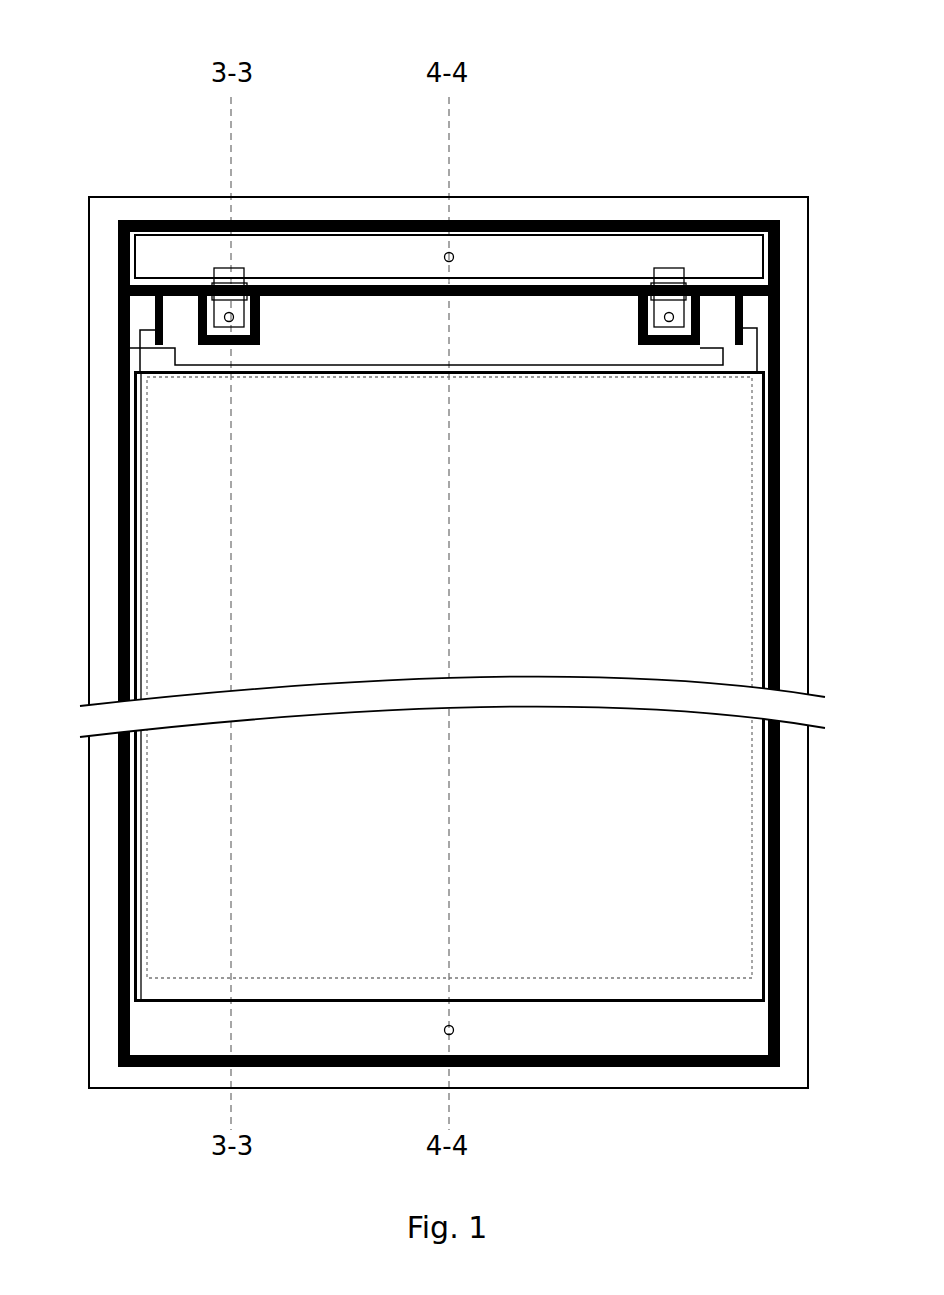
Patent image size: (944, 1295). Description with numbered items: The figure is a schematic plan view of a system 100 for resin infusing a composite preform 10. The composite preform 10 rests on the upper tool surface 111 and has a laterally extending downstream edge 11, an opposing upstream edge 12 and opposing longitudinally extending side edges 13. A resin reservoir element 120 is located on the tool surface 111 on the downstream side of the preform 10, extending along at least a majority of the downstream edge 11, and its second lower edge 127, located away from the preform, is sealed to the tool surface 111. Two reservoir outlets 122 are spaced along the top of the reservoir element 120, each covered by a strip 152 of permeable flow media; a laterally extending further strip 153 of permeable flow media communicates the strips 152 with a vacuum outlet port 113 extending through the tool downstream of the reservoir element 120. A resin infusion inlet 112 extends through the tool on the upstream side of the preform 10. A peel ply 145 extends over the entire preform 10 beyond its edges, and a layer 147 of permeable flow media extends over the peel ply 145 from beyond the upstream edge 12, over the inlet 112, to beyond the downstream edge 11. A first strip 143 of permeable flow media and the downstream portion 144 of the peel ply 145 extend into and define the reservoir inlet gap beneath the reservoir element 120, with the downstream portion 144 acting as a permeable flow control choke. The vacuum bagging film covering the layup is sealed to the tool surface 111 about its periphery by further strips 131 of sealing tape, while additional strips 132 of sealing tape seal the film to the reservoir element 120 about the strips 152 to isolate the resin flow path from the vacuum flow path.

The system 100 is at (92, 135).
The upper tool surface 111 is at (106, 410).
The further strips of sealing tape 131 is at (313, 220).
The further strip of permeable flow media 153 is at (617, 252).
The resin reservoir element 120 is at (410, 298).
The second lower edge 127 is at (528, 284).
The vacuum outlet port 113 is at (454, 255).
The resin infusion inlet 112 is at (455, 1030).
The additional strips of sealing tape 132 is at (202, 315).
The strips of permeable flow media 152 is at (227, 270).
The reservoir outlet 122 is at (234, 317).
The downstream portion of peel ply 144 is at (143, 328).
The first strip of permeable flow media 143 is at (187, 355).
The downstream edge 11 is at (737, 372).
The composite preform 10 is at (752, 538).
The side edges 13 is at (148, 650).
The layer of permeable flow media 147 is at (173, 1025).
The peel ply 145 is at (141, 591).
The upstream edge 12 is at (705, 978).